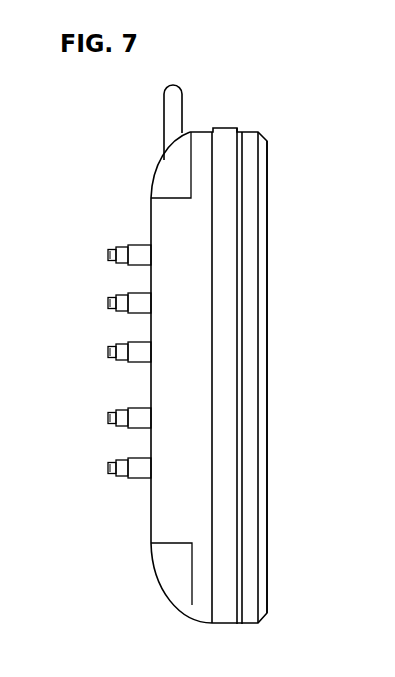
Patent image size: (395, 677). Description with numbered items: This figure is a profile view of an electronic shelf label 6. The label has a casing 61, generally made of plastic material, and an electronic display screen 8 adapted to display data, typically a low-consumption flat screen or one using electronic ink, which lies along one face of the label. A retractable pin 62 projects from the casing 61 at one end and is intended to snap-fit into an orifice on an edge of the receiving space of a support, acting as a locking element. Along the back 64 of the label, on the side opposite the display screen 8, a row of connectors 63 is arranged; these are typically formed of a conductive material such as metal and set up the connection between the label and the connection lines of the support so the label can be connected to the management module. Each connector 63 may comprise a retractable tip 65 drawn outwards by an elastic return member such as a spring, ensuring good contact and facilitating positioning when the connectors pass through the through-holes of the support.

The electronic shelf label 6 is at (191, 354).
The electronic display screen 8 is at (268, 362).
The casing 61 is at (173, 569).
The retractable pin 62 is at (172, 108).
The connectors 63 is at (102, 231).
The back 64 is at (150, 395).
The retractable tip 65 is at (108, 253).